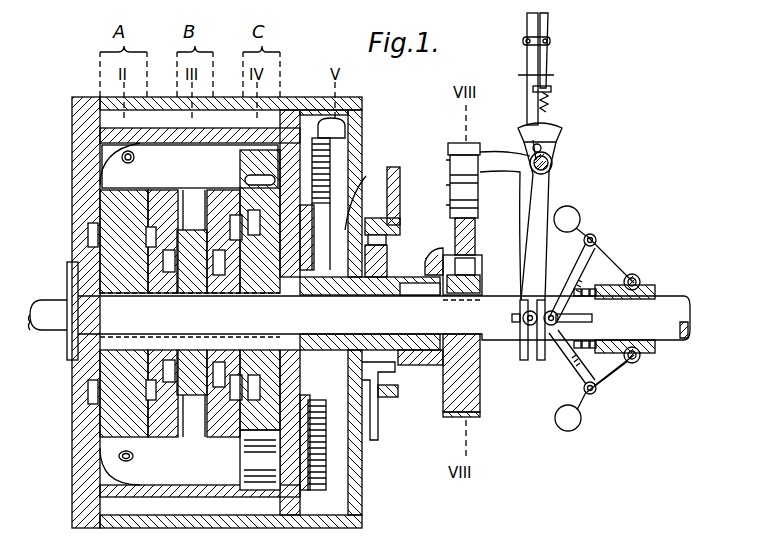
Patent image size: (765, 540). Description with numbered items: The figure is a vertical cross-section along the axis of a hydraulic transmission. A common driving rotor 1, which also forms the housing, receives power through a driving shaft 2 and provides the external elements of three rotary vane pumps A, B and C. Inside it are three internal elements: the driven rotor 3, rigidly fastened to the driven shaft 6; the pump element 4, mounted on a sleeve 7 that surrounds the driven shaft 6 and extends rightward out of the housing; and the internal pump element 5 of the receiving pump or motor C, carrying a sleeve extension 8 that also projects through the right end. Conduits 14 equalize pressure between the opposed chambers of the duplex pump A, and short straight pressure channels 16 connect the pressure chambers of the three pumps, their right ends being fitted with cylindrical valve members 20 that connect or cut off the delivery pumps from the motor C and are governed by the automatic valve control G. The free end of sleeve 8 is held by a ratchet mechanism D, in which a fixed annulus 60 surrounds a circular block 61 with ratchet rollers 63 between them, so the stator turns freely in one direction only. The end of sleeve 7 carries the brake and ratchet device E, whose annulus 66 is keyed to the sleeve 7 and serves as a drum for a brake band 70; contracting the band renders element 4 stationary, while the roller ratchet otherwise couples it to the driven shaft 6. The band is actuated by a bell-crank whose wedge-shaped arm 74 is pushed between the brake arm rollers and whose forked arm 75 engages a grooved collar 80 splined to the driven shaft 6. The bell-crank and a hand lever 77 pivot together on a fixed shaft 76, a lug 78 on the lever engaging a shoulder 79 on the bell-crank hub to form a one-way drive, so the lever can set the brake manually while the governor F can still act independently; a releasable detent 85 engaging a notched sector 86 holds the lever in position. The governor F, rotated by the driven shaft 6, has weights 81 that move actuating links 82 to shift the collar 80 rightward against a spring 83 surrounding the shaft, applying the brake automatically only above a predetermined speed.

The rotor 1 is at (72, 487).
The driving shaft 2 is at (48, 305).
The driven rotor 3 is at (100, 212).
The pump element 4 is at (195, 215).
The internal pump element 5 is at (320, 245).
The driven shaft 6 is at (384, 318).
The sleeve 7 is at (392, 200).
The sleeve extension 8 is at (360, 197).
The conduits 14 is at (127, 162).
The pressure channels 16 is at (190, 166).
The cylindrical valve members 20 is at (292, 110).
The fixed annulus 60 is at (392, 226).
The circular block 61 is at (385, 372).
The ratchet rollers 63 is at (390, 262).
The annulus 66 is at (480, 262).
The brake band 70 is at (466, 418).
The arm 74 is at (478, 143).
The arm 75 is at (546, 205).
The fixed shaft 76 is at (552, 165).
The hand lever 77 is at (527, 60).
The lug 78 is at (542, 149).
The shoulder 79 is at (530, 148).
The grooved collar 80 is at (521, 290).
The governor weights 81 is at (579, 219).
The actuating links 82 is at (578, 258).
The spring 83 is at (620, 276).
The releasable detent 85 is at (548, 100).
The notched sector 86 is at (556, 128).
The rotary vane pump A is at (144, 229).
The rotary vane pump B is at (224, 313).
The receiving pump or motor C is at (260, 290).
The ratchet mechanism D is at (388, 250).
The brake and ratchet device E is at (461, 246).
The automatic control device F is at (597, 275).
The control G is at (345, 142).